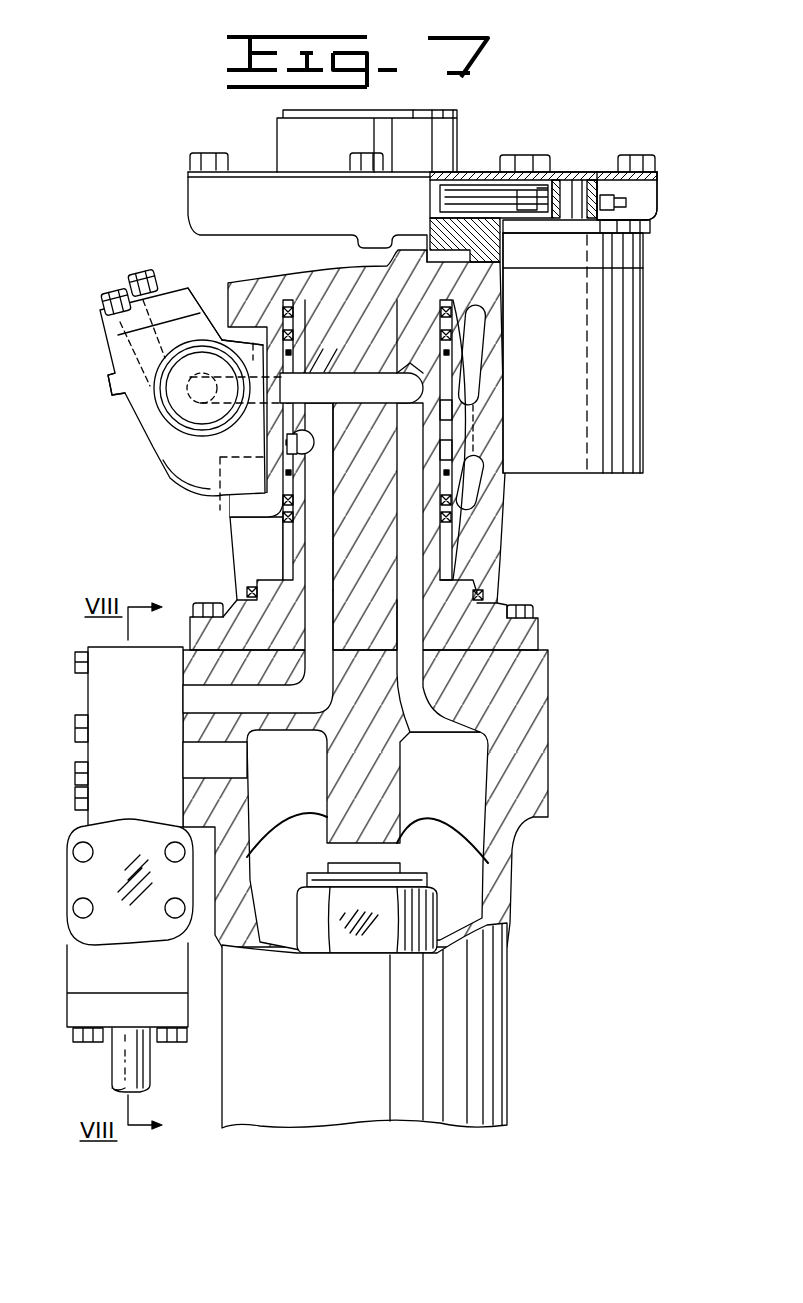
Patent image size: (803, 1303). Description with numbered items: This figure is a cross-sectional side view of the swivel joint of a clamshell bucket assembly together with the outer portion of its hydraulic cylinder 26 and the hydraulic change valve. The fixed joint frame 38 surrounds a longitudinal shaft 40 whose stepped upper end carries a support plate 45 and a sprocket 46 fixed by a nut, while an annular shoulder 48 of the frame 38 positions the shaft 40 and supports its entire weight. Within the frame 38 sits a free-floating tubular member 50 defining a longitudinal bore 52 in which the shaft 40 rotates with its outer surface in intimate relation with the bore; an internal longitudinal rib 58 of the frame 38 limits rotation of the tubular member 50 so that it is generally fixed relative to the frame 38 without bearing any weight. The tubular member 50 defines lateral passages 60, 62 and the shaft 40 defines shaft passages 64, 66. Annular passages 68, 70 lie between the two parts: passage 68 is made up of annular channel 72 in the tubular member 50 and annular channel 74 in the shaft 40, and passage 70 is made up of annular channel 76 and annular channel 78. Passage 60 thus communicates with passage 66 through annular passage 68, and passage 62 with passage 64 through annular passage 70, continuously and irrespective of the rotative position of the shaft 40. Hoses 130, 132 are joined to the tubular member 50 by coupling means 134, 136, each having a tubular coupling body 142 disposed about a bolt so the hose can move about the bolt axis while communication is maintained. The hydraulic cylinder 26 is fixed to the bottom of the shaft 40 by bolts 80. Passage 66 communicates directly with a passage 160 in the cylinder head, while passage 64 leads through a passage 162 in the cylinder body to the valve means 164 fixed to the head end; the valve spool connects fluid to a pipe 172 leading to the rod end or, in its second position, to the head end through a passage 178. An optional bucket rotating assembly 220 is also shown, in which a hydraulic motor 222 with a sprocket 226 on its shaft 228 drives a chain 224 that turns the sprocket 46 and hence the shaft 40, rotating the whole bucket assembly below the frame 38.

The hydraulic cylinder 26 is at (538, 767).
The fixed joint frame 38 is at (492, 295).
The longitudinal shaft 40 is at (343, 280).
The support plate 45 is at (433, 231).
The sprocket 46 is at (472, 198).
The annular shoulder 48 is at (498, 258).
The tubular member 50 is at (450, 497).
The longitudinal bore 52 is at (466, 483).
The internal longitudinal rib 58 is at (476, 420).
The lateral passage 60 is at (262, 345).
The lateral passage 62 is at (217, 495).
The shaft passage 64 is at (328, 517).
The shaft passage 66 is at (402, 597).
The annular passage 68 is at (323, 358).
The annular passage 70 is at (299, 445).
The annular channel 72 is at (300, 373).
The annular channel 74 is at (298, 389).
The annular channel 76 is at (215, 455).
The annular channel 78 is at (307, 423).
The bolts 80 is at (210, 600).
The hose 130 is at (104, 310).
The hose 132 is at (132, 280).
The coupling means 134 is at (136, 460).
The coupling means 136 is at (205, 313).
The tubular coupling body 142 is at (110, 392).
The passage 160 is at (427, 697).
The passage 162 is at (200, 690).
The valve means 164 is at (165, 717).
The pipe 172 is at (120, 1058).
The passage 178 is at (207, 770).
The bucket rotating assembly 220 is at (276, 135).
The hydraulic motor 222 is at (600, 338).
The chain 224 is at (466, 200).
The sprocket 226 is at (613, 201).
The shaft 228 is at (588, 213).